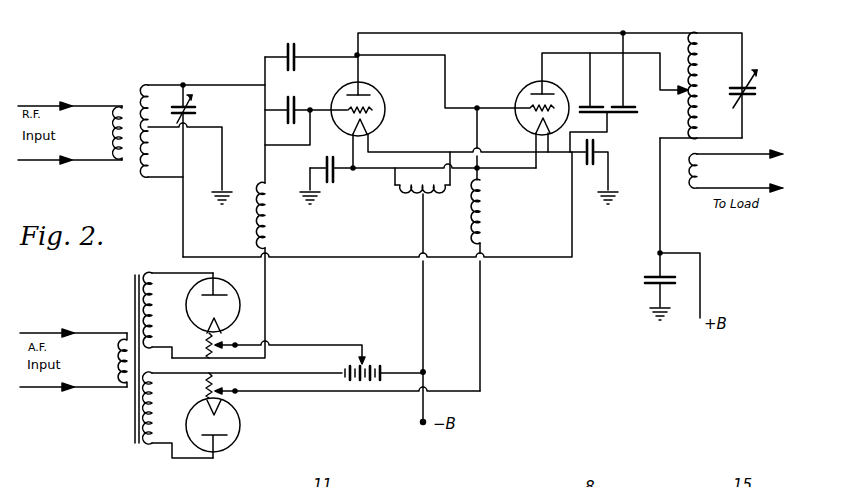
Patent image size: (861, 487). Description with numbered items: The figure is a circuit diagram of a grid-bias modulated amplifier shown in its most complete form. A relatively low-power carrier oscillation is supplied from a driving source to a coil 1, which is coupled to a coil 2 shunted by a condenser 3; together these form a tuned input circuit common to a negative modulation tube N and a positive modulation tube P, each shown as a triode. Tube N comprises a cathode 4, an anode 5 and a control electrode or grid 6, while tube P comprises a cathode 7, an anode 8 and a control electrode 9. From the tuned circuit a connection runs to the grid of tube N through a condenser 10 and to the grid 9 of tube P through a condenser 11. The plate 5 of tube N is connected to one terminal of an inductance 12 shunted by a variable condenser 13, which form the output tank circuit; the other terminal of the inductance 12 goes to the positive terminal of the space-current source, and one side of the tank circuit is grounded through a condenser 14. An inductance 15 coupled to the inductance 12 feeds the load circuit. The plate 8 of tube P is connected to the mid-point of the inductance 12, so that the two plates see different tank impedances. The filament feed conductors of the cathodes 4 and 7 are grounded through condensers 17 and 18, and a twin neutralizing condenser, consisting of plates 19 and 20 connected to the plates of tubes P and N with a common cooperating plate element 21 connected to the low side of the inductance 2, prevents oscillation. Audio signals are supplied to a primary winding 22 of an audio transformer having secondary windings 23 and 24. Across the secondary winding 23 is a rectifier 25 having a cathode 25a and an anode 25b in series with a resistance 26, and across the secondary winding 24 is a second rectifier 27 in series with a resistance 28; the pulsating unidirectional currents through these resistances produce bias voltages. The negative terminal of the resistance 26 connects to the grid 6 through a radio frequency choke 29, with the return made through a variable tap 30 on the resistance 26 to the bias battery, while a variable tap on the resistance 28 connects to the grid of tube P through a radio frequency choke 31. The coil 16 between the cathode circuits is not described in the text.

The coil 1 is at (117, 135).
The coil 2 is at (160, 85).
The condenser 3 is at (200, 110).
The cathode 4 is at (366, 121).
The anode 5 is at (536, 89).
The control electrode or grid 6 is at (372, 107).
The cathode 7 is at (592, 99).
The anode 8 is at (549, 92).
The control electrode 9 is at (556, 106).
The condenser 10 is at (297, 101).
The condenser 11 is at (299, 34).
The inductance 12 is at (701, 57).
The variable condenser 13 is at (755, 94).
The condenser 14 is at (643, 278).
The inductance 15 is at (708, 173).
The center-tapped cathode coil 16 is at (407, 197).
The condenser 17 is at (338, 178).
The condenser 18 is at (598, 150).
The plate 19 is at (593, 104).
The plate 20 is at (630, 104).
The common cooperating plate element 21 is at (630, 113).
The primary winding 22 is at (116, 353).
The secondary winding 23 is at (160, 303).
The secondary winding 24 is at (157, 448).
The rectifier 25 is at (255, 281).
The cathode 25a is at (222, 328).
The anode 25b is at (212, 273).
The resistance 26 is at (226, 333).
The second rectifier 27 is at (241, 429).
The resistance 28 is at (215, 384).
The radio frequency choke 29 is at (272, 236).
The variable tap 30 is at (332, 340).
The radio frequency choke 31 is at (486, 224).
The negative modulation tube N is at (395, 138).
The positive modulation tube P is at (516, 70).